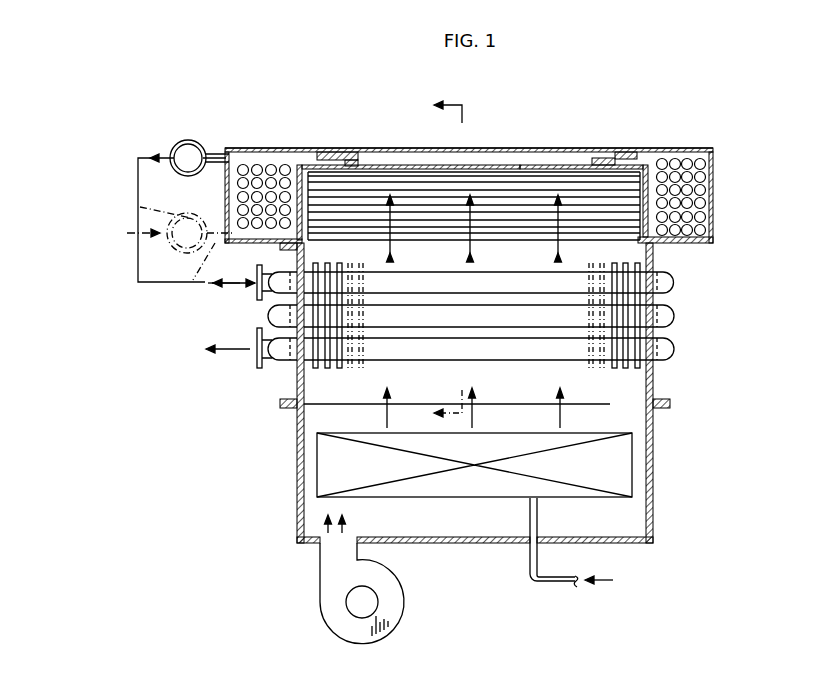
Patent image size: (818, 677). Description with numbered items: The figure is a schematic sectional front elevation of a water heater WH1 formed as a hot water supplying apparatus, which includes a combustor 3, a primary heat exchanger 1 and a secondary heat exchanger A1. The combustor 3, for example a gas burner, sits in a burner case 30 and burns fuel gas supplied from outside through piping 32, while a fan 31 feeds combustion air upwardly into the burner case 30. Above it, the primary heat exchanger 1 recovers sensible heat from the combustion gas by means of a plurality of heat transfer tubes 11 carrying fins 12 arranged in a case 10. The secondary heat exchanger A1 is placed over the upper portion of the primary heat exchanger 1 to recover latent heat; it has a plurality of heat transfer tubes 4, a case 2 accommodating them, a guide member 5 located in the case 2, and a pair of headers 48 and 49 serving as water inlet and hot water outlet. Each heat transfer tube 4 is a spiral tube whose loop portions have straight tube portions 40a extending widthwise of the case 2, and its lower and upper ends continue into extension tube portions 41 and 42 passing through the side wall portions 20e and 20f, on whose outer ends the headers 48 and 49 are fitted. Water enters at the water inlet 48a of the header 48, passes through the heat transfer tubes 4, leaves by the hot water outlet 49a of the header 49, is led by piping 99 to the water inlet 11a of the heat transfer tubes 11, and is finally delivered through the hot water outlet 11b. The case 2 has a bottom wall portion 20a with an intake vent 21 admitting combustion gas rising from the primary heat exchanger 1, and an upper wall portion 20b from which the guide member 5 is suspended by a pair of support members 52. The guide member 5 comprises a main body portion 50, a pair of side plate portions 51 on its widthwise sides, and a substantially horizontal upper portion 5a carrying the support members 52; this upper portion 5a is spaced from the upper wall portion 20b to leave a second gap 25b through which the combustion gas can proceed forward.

The water heater WH1 is at (248, 115).
The secondary heat exchanger A1 is at (291, 148).
The primary heat exchanger 1 is at (292, 367).
The case 2 is at (383, 149).
The combustor 3 is at (328, 462).
The heat transfer tubes 4 is at (699, 158).
The guide member 5 is at (545, 160).
The upper portion 5a is at (515, 162).
The case 10 is at (654, 378).
The heat transfer tubes 11 is at (508, 275).
The water inlet 11a is at (256, 288).
The hot water outlet 11b is at (256, 358).
The fins 12 is at (342, 370).
The bottom wall portion 20a is at (690, 244).
The upper wall portion 20b is at (634, 148).
The side wall portion 20e is at (225, 198).
The side wall portion 20f is at (715, 193).
The intake vent 21 is at (412, 243).
The second gap 25b is at (473, 150).
The burner case 30 is at (297, 497).
The fan 31 is at (330, 605).
The piping 32 is at (537, 555).
The straight tube portion 40a is at (412, 200).
The extension tube portion 41 is at (190, 284).
The extension tube portion 42 is at (217, 155).
The header 48 is at (175, 250).
The water inlet 48a is at (138, 208).
The header 49 is at (175, 148).
The hot water outlet 49a is at (188, 150).
The main body portion 50 is at (444, 160).
The side plate portions 51 is at (290, 213).
The support members 52 is at (347, 150).
The piping 99 is at (163, 284).